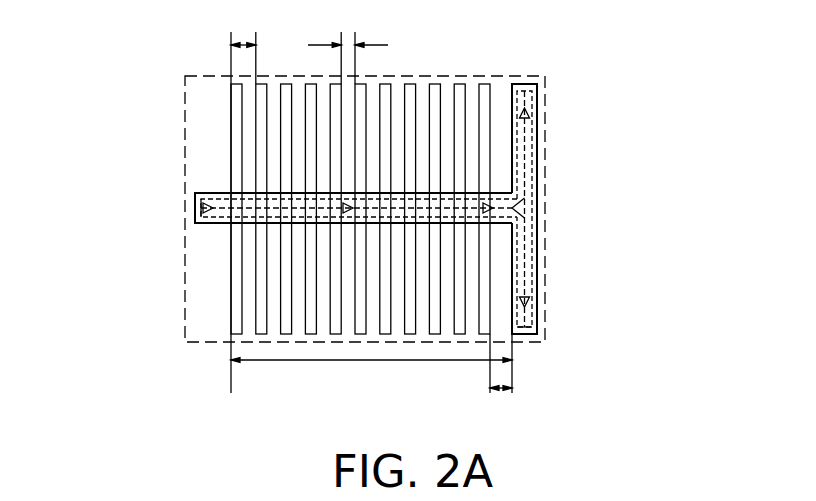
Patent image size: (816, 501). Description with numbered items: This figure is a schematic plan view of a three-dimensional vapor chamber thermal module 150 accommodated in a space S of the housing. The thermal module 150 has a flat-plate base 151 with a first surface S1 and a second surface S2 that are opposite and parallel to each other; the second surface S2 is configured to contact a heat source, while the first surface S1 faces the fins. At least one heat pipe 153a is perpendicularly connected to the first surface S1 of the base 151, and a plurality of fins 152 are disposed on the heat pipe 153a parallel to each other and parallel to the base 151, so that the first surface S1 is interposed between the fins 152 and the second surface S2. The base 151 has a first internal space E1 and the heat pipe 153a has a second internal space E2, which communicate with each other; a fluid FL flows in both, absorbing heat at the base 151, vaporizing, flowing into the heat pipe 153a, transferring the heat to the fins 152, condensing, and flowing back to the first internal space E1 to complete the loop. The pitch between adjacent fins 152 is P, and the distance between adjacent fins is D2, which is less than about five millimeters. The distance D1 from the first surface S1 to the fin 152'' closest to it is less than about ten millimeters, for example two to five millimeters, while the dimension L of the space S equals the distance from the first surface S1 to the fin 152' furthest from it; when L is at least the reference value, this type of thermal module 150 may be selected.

The thermal module 150 is at (723, 420).
The base 151 is at (525, 85).
The fins 152 is at (363, 187).
The fin furthest from the first surface 152' is at (173, 209).
The fin closest to the first surface 152'' is at (550, 229).
The heat pipe 153a is at (207, 224).
The space S is at (185, 90).
The first surface S1 is at (511, 97).
The second surface S2 is at (538, 112).
The first internal space E1 is at (525, 318).
The second internal space E2 is at (200, 207).
The fluid FL is at (525, 151).
The pitch between adjacent fins P is at (243, 196).
The distance from the first surface to the closest fin D1 is at (501, 380).
The distance between adjacent fins D2 is at (348, 42).
The dimension of the space L is at (371, 365).